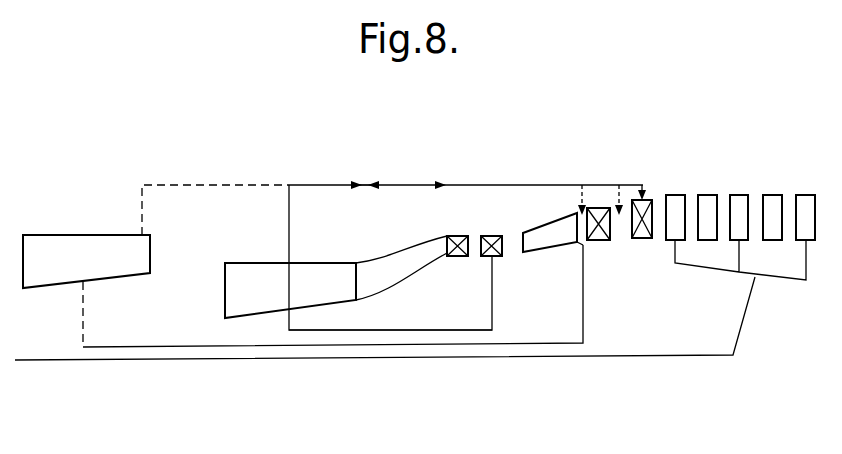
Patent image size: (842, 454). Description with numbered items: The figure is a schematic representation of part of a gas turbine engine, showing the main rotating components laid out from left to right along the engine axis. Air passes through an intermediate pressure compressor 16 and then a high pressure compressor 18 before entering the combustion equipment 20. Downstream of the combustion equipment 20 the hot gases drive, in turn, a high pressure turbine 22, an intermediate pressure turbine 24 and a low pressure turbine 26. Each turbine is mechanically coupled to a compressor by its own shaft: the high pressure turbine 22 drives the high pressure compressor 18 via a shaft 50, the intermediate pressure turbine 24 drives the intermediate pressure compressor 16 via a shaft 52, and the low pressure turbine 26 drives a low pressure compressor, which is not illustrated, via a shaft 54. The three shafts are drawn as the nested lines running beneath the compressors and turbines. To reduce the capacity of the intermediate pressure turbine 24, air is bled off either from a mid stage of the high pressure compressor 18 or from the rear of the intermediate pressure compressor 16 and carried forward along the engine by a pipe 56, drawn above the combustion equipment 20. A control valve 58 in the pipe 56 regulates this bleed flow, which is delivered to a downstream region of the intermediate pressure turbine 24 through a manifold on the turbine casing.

The intermediate pressure compressor 16 is at (70, 212).
The high pressure compressor 18 is at (260, 265).
The combustion equipment 20 is at (409, 212).
The high pressure turbine 22 is at (492, 212).
The intermediate pressure turbine 24 is at (560, 199).
The low pressure turbine 26 is at (744, 172).
The shaft 50 is at (340, 330).
The shaft 52 is at (408, 345).
The shaft 54 is at (490, 358).
The pipe 56 is at (325, 183).
The control valve 58 is at (366, 170).